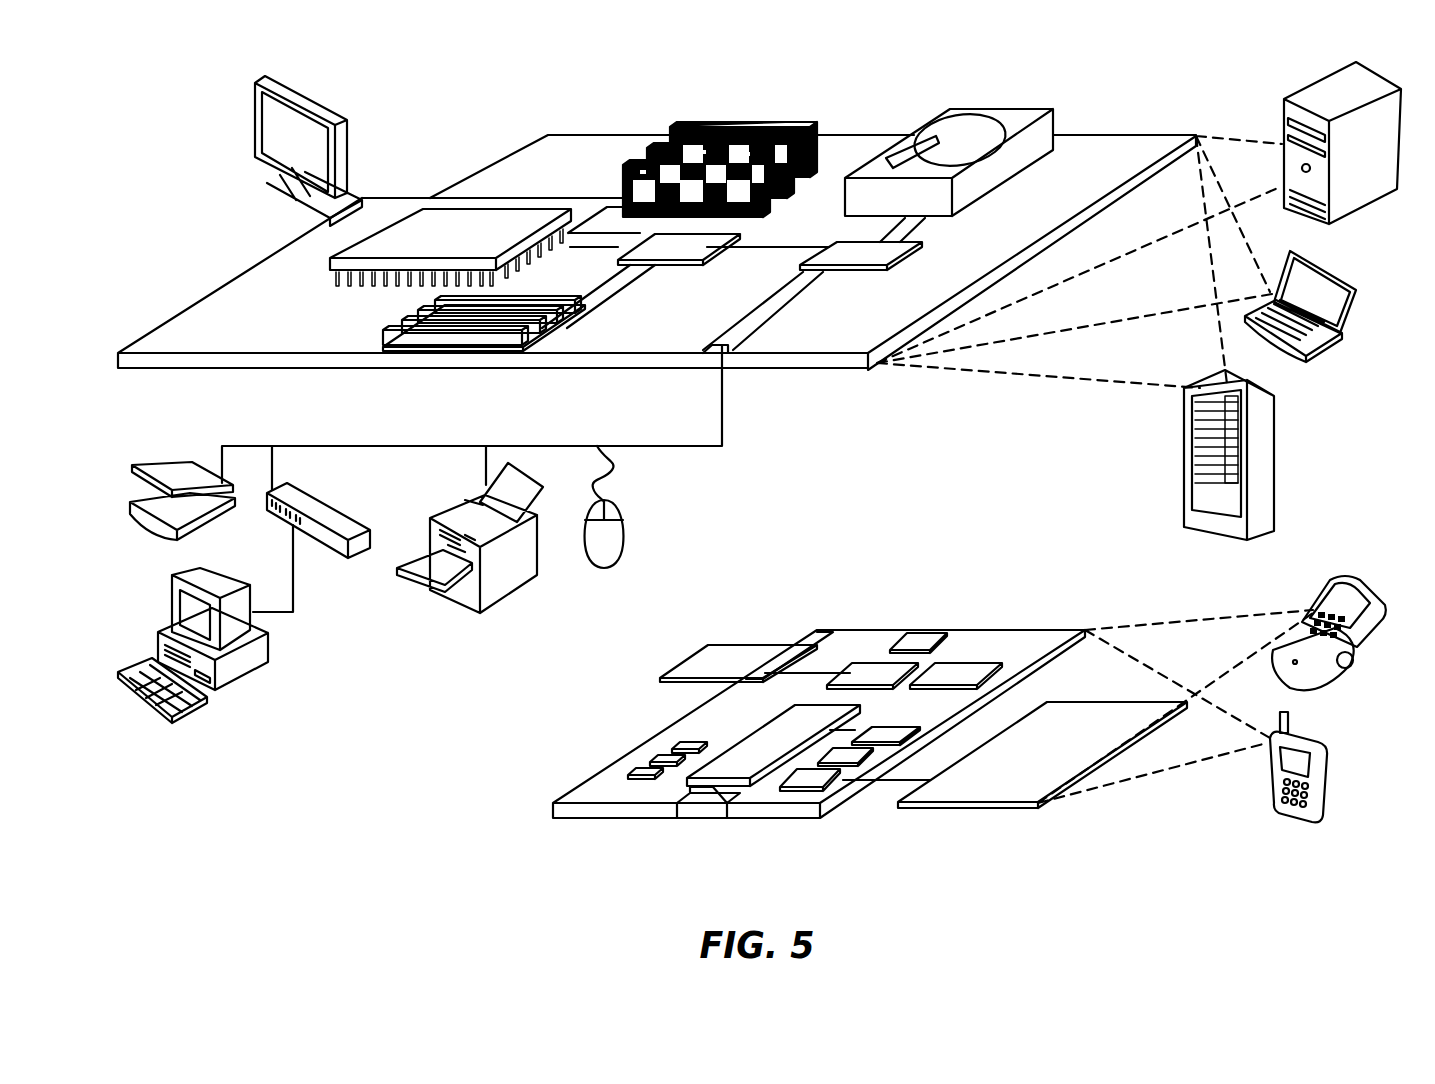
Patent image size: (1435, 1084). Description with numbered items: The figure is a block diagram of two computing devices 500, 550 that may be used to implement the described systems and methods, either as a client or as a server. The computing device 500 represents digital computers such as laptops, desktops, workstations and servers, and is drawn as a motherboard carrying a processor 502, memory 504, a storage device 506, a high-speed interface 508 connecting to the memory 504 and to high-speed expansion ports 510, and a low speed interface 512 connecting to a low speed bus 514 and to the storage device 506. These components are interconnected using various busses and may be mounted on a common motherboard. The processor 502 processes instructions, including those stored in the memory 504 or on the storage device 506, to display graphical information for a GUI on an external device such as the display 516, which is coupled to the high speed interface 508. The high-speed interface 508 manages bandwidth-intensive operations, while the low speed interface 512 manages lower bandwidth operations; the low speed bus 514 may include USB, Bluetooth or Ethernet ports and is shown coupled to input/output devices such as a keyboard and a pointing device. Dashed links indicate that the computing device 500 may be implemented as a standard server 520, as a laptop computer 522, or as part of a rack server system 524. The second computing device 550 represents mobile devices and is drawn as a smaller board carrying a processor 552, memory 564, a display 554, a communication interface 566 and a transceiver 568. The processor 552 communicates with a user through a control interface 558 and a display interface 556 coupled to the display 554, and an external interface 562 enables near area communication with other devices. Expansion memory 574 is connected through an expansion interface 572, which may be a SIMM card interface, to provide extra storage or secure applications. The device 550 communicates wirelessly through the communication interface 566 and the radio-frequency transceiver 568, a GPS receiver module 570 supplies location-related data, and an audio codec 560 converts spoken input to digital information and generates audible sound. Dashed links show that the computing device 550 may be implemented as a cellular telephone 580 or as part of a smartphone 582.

The computing device 500 is at (462, 102).
The processor 502 is at (328, 263).
The memory 504 is at (680, 128).
The storage device 506 is at (932, 112).
The high-speed interface 508 is at (655, 243).
The high-speed expansion ports 510 is at (413, 326).
The low speed interface 512 is at (845, 244).
The low speed bus 514 is at (728, 353).
The display 516 is at (253, 80).
The standard server 520 is at (1284, 124).
The laptop computer 522 is at (1362, 282).
The rack server system 524 is at (1184, 483).
The computing device 550 is at (527, 824).
The processor 552 is at (743, 768).
The display 554 is at (1000, 788).
The display interface 556 is at (817, 773).
The control interface 558 is at (853, 753).
The audio codec 560 is at (882, 732).
The external interface 562 is at (707, 805).
The memory 564 is at (645, 762).
The communication interface 566 is at (873, 670).
The transceiver 568 is at (957, 670).
The GPS receiver module 570 is at (930, 632).
The expansion interface 572 is at (797, 642).
The expansion memory 574 is at (710, 643).
The cellular telephone 580 is at (1313, 585).
The smartphone 582 is at (1270, 773).